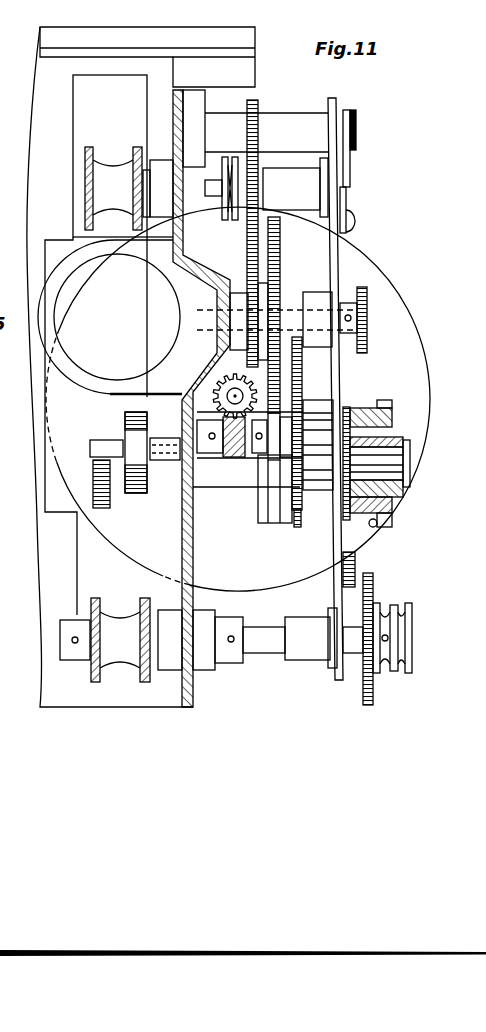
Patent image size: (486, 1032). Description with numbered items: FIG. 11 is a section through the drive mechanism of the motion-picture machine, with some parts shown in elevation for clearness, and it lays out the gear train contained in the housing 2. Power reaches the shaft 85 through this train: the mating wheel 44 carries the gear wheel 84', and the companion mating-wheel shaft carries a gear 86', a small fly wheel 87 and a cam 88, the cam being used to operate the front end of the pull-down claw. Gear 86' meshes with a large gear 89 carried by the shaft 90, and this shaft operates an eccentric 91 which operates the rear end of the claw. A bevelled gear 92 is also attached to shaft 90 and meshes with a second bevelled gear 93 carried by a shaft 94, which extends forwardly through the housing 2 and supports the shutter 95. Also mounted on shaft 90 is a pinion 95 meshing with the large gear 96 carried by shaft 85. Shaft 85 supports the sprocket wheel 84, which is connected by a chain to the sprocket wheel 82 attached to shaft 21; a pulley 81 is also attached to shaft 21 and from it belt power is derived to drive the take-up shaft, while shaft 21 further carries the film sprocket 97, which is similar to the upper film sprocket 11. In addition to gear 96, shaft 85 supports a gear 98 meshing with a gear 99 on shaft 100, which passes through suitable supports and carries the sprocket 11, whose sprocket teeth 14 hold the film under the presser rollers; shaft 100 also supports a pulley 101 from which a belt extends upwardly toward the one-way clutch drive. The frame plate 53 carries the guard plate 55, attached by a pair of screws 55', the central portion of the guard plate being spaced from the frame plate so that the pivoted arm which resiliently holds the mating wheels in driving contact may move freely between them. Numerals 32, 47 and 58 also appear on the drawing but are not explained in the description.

The housing 2 is at (42, 75).
The sprocket 11 is at (113, 177).
The sprocket teeth 14 is at (90, 147).
The shaft 21 is at (355, 645).
The gear 32 is at (356, 562).
The mating wheel 44 is at (390, 389).
The pawl 47 is at (377, 527).
The frame plate 53 is at (338, 590).
The guard plate 55 is at (362, 171).
The screws 55' is at (375, 209).
The block 58 is at (356, 130).
The pulley 81 is at (412, 637).
The sprocket wheel 82 is at (373, 583).
The sprocket wheel 84 is at (392, 307).
The gear wheel 84' is at (412, 454).
The shaft 85 is at (352, 308).
The gear 86' is at (312, 453).
The small fly wheel 87 is at (262, 513).
The cam 88 is at (107, 503).
The large gear 89 is at (297, 523).
The shaft 90 is at (147, 407).
The eccentric 91 is at (103, 448).
The bevelled gear 92 is at (230, 445).
The second bevelled gear 93 is at (157, 373).
The shaft 94 is at (193, 368).
The pinion 95 is at (422, 433).
The large gear 96 is at (280, 243).
The film sprocket 97 is at (115, 622).
The gear 98 is at (240, 267).
The gear 99 is at (276, 225).
The shaft 100 is at (260, 183).
The pulley 101 is at (222, 160).